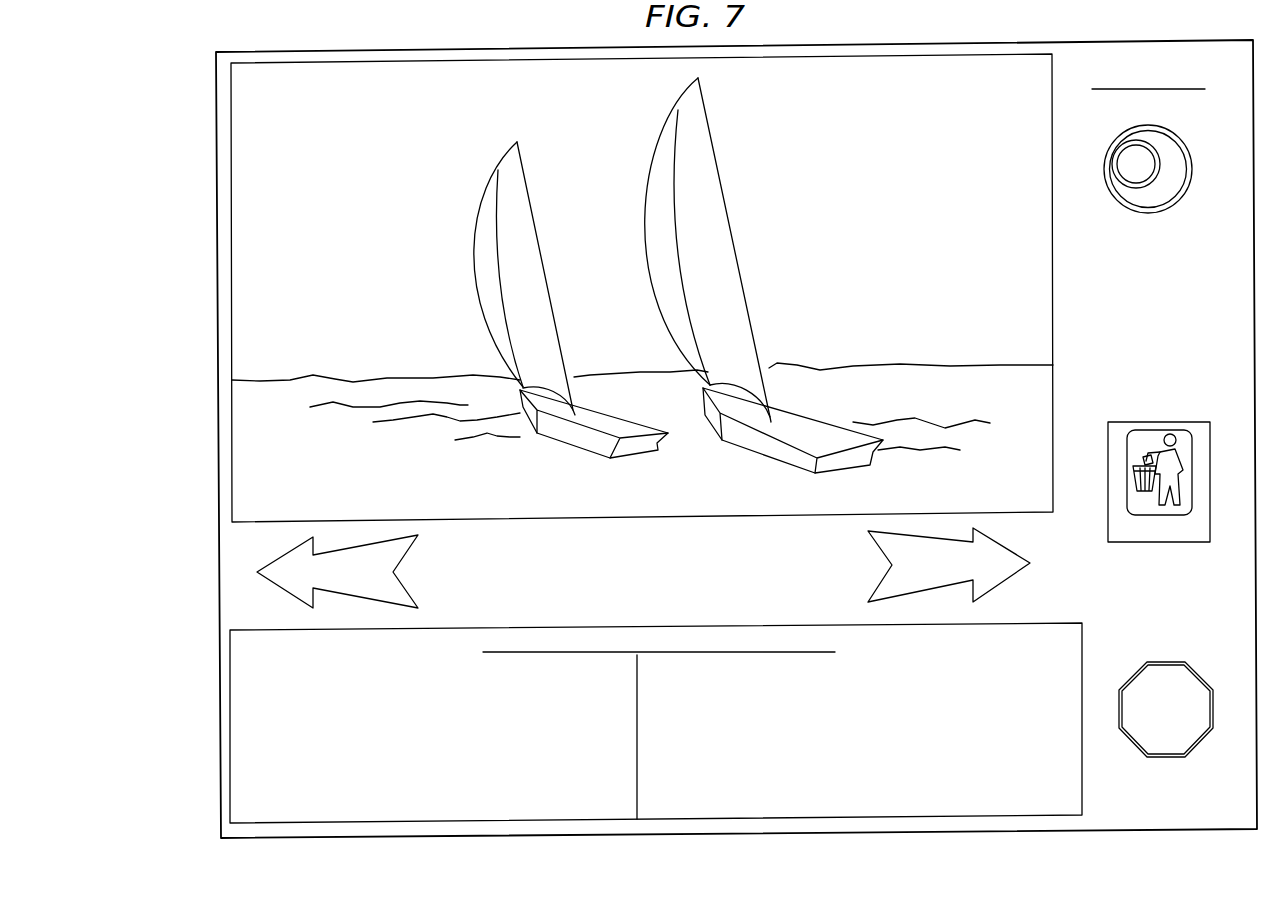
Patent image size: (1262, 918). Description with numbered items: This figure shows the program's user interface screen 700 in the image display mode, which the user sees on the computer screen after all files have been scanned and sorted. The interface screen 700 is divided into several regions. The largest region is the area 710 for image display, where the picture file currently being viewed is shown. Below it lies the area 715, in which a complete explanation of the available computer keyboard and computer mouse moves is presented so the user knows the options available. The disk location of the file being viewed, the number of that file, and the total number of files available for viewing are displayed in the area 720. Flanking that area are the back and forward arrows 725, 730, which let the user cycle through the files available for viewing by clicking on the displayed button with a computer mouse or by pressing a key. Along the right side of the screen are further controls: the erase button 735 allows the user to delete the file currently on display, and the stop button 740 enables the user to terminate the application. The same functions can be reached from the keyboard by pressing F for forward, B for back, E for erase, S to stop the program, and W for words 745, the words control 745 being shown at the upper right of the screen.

The user interface screen 700 is at (198, 132).
The area for image display 710 is at (231, 283).
The explanation area 715 is at (229, 738).
The file information area 720 is at (660, 586).
The back arrow 725 is at (280, 559).
The forward arrow 730 is at (870, 592).
The erase button 735 is at (1155, 422).
The stop button 740 is at (1161, 662).
The words button 745 is at (1108, 150).